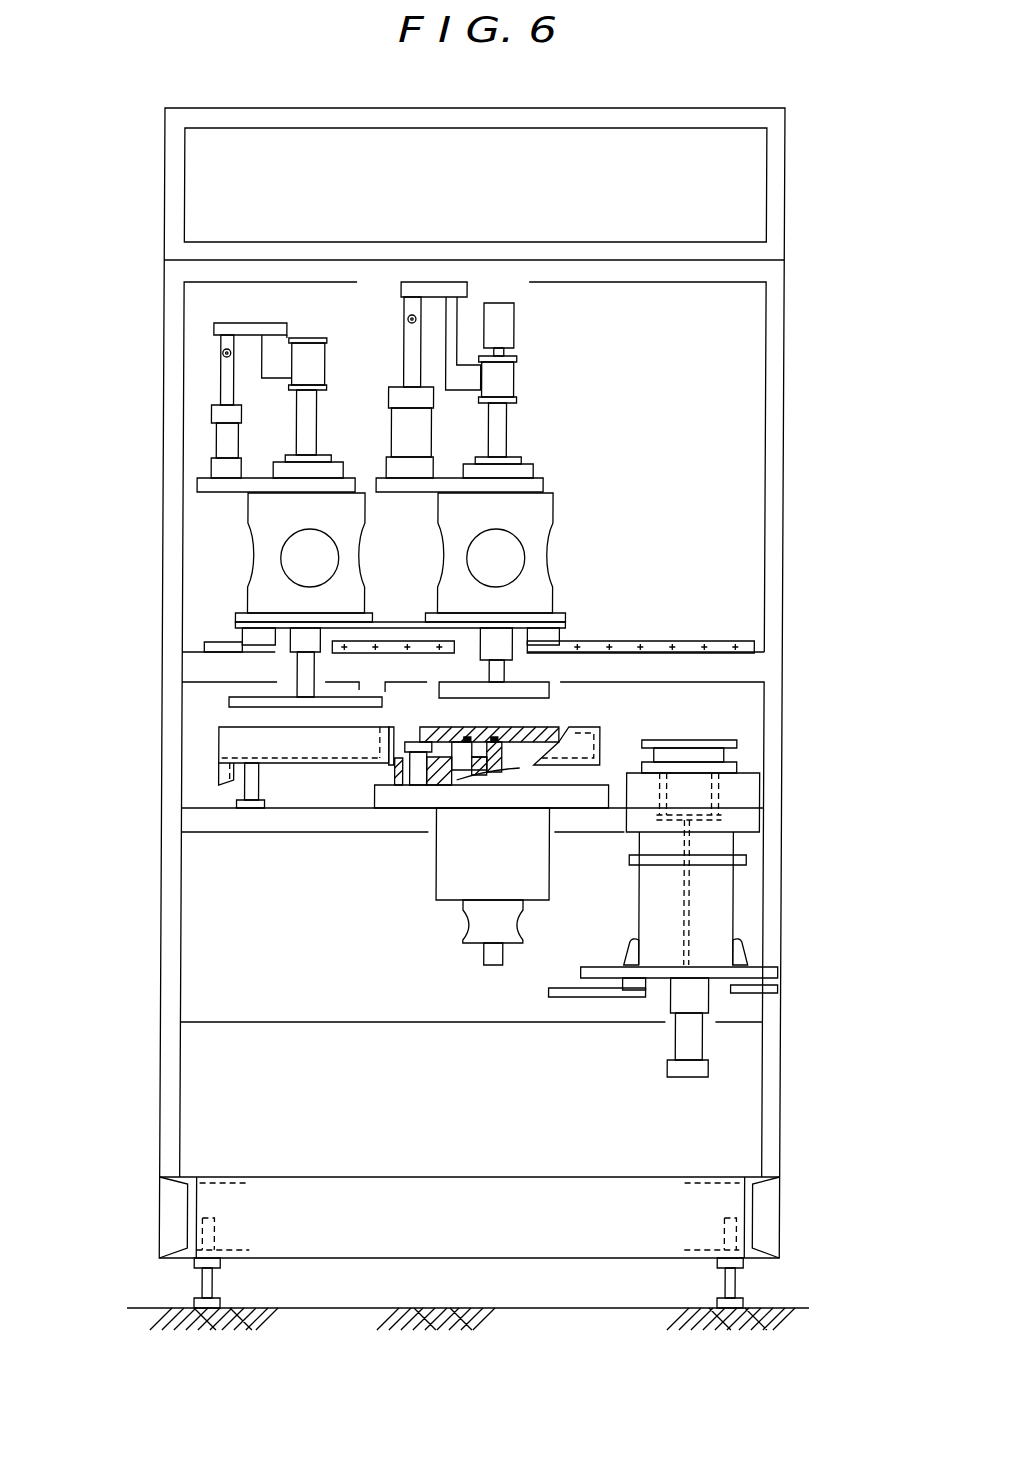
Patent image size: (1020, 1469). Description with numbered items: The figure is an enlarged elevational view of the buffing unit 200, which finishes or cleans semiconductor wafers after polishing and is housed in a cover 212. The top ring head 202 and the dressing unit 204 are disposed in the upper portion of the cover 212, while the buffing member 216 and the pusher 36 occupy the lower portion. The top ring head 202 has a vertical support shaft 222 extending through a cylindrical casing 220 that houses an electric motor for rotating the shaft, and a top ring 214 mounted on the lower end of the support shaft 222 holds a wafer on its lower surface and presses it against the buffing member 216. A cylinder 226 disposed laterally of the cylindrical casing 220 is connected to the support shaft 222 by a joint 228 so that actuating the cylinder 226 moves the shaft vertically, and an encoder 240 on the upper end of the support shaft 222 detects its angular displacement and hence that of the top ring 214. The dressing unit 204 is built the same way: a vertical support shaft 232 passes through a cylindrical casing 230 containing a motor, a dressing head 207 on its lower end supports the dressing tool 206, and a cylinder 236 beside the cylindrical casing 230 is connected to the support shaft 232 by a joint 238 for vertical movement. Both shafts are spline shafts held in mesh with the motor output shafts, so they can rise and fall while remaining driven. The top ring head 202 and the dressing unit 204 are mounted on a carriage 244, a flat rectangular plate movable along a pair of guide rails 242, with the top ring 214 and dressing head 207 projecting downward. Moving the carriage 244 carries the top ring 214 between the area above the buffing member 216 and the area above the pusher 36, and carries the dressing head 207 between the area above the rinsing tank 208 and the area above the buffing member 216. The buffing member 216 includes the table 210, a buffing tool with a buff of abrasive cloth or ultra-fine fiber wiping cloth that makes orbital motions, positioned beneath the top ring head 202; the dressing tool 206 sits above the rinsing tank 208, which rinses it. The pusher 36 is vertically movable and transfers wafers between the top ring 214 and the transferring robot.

The buffing unit 200 is at (608, 232).
The cover 212 is at (163, 295).
The joint 238 is at (276, 342).
The joint 228 is at (457, 290).
The encoder 240 is at (508, 332).
The support shaft 232 is at (307, 403).
The cylinder 226 is at (408, 443).
The cylinder 236 is at (227, 437).
The support shaft 222 is at (500, 432).
The dressing unit 204 is at (210, 337).
The top ring head 202 is at (515, 337).
The cylindrical casing 230 is at (267, 566).
The cylindrical casing 220 is at (547, 517).
The carriage 244 is at (557, 615).
The guide rails 242 is at (727, 642).
The top ring 214 is at (547, 683).
The table 210 is at (555, 727).
The dressing head 207 is at (232, 703).
The dressing tool 206 is at (222, 740).
The rinsing tank 208 is at (222, 772).
The buffing member 216 is at (437, 861).
The pusher 36 is at (742, 743).